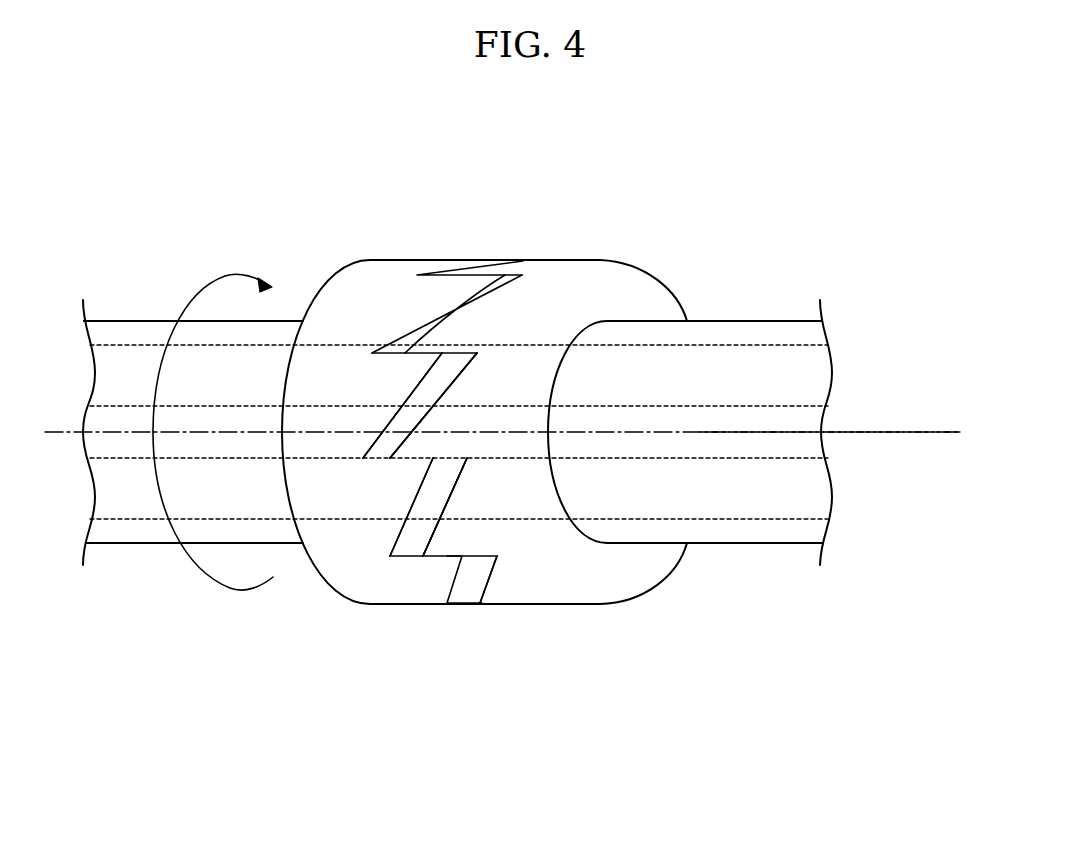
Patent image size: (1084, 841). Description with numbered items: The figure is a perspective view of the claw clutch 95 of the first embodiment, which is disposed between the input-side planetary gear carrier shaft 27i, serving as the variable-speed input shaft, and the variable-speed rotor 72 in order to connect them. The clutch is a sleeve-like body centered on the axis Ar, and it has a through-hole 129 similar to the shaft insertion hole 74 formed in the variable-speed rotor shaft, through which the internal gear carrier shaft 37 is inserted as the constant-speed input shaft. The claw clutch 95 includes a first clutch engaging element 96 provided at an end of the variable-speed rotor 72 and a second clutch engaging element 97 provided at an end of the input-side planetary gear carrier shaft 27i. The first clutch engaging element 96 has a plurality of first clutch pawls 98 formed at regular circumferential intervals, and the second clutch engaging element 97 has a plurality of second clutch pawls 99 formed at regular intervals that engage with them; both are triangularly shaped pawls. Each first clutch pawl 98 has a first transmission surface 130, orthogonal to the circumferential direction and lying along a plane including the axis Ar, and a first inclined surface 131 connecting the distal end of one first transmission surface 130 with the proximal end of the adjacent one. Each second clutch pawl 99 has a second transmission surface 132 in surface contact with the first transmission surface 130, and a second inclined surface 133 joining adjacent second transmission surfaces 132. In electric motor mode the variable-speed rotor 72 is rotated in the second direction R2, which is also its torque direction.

The claw clutch 95 is at (588, 220).
The first clutch engaging element 96 is at (376, 259).
The second clutch engaging element 97 is at (548, 262).
The first clutch pawl 98 is at (448, 283).
The second clutch pawl 99 is at (457, 328).
The through-hole 129 is at (560, 355).
The first transmission surface 130 is at (382, 434).
The first inclined surface 131 is at (419, 386).
The second transmission surface 132 is at (473, 355).
The second inclined surface 133 is at (452, 372).
The shaft insertion hole 74 is at (141, 347).
The internal gear carrier shaft 37 is at (133, 460).
The variable-speed rotor 72 is at (158, 545).
The input-side planetary gear carrier shaft 27i is at (765, 530).
The second direction R2 is at (213, 418).
The axis Ar is at (914, 430).